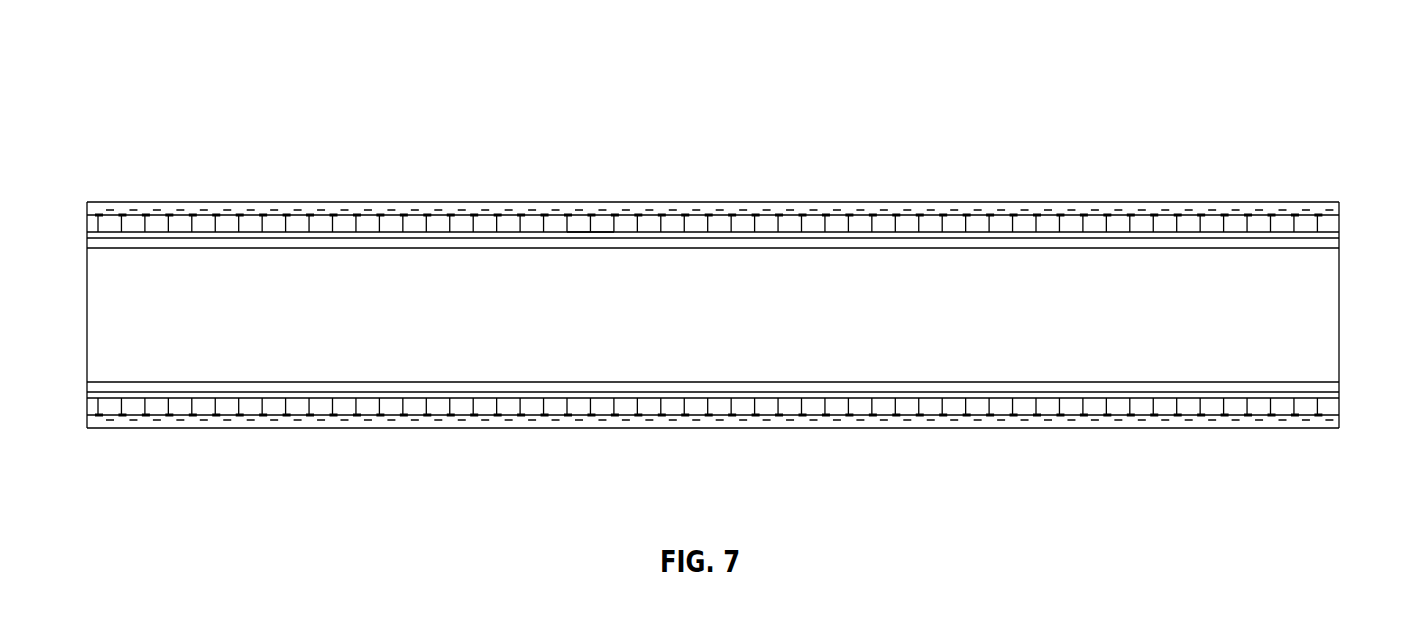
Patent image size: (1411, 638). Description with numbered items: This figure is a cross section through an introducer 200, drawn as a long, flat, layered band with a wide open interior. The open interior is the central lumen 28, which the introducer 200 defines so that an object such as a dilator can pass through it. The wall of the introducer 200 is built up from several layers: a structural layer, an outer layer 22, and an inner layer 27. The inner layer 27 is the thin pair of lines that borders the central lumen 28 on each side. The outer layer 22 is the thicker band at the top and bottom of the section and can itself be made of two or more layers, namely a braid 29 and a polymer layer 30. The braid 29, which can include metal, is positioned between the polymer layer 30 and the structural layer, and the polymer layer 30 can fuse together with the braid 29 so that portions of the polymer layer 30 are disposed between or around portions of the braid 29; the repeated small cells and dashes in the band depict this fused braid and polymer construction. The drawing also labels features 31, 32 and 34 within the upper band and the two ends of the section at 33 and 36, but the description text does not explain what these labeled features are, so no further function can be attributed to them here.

The introducer 200 is at (1195, 78).
The outer layer 22 is at (1080, 202).
The inner layer 27 is at (882, 238).
The central lumen 28 is at (1320, 323).
The braid 29 is at (1173, 212).
The polymer layer 30 is at (1243, 202).
The cell partitions 31 is at (610, 218).
The cell 32 is at (567, 226).
The first end 33 is at (111, 437).
The cell 34 is at (592, 226).
The second end 36 is at (1323, 439).